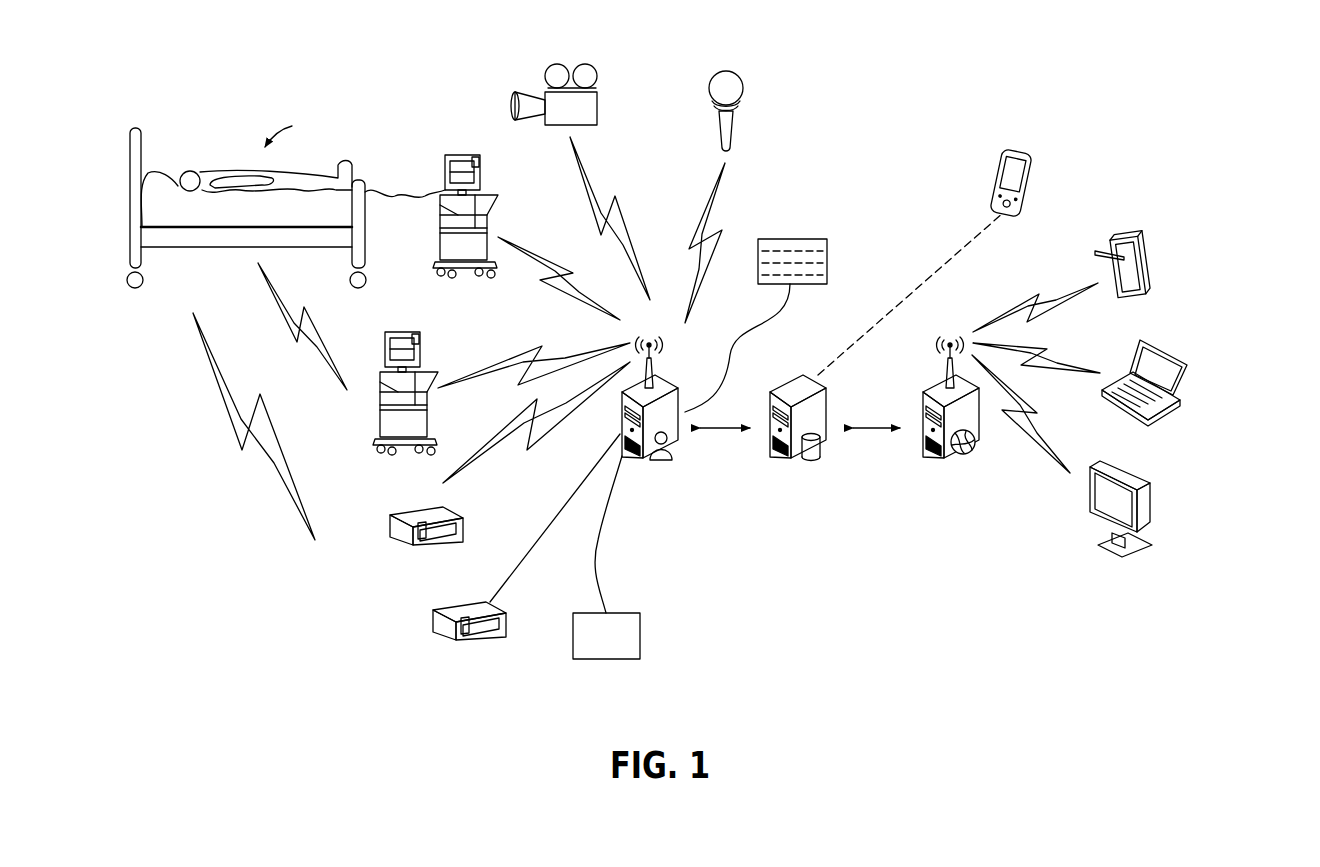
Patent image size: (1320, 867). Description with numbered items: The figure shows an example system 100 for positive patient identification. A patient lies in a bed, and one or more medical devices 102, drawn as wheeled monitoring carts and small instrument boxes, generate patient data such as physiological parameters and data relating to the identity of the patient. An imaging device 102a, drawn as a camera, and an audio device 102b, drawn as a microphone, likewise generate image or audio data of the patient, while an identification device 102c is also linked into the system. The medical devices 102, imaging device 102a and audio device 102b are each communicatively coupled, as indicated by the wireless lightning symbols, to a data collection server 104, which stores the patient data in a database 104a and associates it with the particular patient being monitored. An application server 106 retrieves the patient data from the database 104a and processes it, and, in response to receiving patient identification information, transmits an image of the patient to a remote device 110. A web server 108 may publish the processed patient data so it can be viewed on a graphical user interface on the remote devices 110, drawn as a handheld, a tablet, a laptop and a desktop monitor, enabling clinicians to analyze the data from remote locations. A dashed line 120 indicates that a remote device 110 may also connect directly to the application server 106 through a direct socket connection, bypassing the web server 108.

The system 100 is at (1112, 190).
The medical devices 102 is at (438, 245).
The imaging device 102a is at (511, 103).
The audio device 102b is at (737, 71).
The identification device 102c is at (620, 660).
The data collection server 104 is at (677, 380).
The database 104a is at (810, 239).
The application server 106 is at (803, 372).
The web server 108 is at (933, 387).
The remote devices 110 is at (1031, 178).
The direct socket connection 120 is at (952, 258).